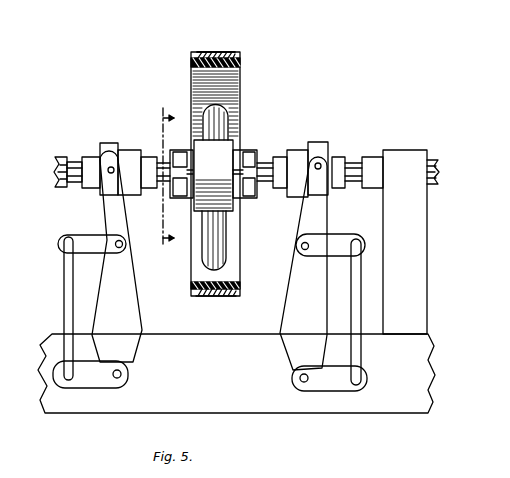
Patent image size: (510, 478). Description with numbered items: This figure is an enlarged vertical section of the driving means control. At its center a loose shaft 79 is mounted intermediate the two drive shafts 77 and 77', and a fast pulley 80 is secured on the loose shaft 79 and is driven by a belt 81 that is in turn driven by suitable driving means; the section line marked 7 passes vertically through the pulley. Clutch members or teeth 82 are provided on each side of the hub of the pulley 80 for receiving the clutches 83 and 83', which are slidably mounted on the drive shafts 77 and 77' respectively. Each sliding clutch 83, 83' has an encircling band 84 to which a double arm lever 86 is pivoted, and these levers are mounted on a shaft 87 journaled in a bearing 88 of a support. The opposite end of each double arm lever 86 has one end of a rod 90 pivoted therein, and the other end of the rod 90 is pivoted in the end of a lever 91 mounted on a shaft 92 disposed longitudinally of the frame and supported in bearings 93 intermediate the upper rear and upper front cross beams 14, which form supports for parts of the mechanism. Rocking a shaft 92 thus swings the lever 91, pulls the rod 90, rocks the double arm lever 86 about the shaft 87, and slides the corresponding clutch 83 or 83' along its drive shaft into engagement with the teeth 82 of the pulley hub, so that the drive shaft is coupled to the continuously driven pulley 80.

The cross beams 14 is at (335, 414).
The section line 7- 7 is at (160, 177).
The drive shaft 77 is at (68, 164).
The drive shaft 77' is at (441, 161).
The loose shaft 79 is at (263, 172).
The fast pulley 80 is at (240, 85).
The belt 81 is at (218, 52).
The clutch members or teeth 82 is at (150, 192).
The clutch 83 is at (144, 146).
The clutch 83' is at (306, 157).
The encircling band 84 is at (109, 150).
The double arm lever 86 is at (72, 236).
The shaft 87 is at (300, 250).
The bearing 88 is at (132, 262).
The rod 90 is at (64, 298).
The lever 91 is at (95, 382).
The shaft 92 is at (128, 374).
The bearings 93 is at (135, 347).